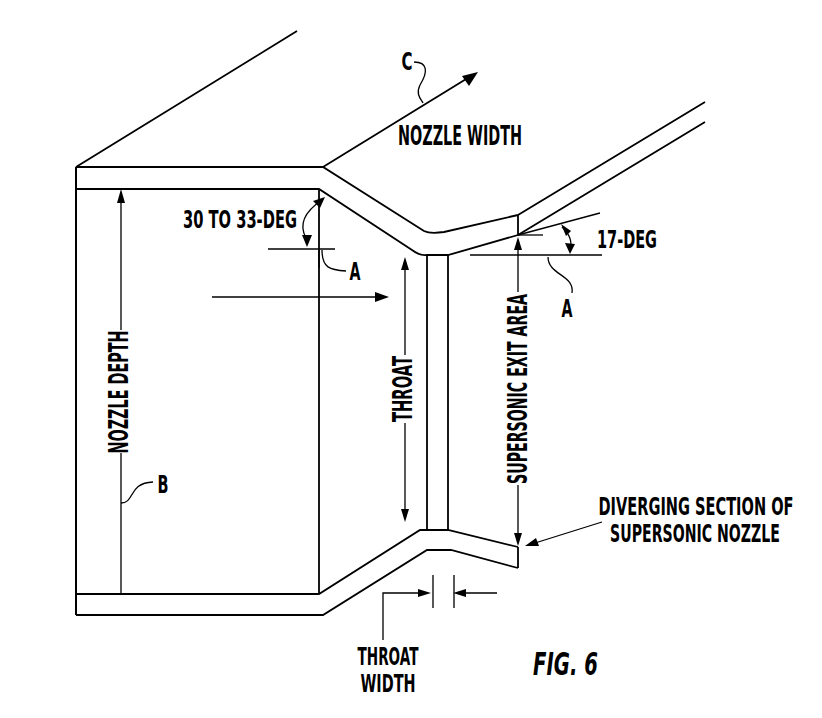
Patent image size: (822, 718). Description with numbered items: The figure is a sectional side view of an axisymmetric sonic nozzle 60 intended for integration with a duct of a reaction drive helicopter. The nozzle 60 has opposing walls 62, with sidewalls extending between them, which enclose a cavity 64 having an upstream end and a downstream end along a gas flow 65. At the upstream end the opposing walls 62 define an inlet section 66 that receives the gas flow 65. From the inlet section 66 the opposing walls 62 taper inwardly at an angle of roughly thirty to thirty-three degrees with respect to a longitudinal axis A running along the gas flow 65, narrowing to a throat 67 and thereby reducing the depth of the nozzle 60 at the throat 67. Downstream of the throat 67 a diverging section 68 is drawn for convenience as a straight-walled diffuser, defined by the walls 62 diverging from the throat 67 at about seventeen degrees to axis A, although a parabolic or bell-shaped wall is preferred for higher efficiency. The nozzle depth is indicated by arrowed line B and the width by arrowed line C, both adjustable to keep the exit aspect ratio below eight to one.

The axisymmetric sonic nozzle 60 is at (261, 122).
The opposing walls 62 is at (145, 173).
The cavity 64 is at (187, 340).
The gas flow 65 is at (278, 298).
The inlet section 66 is at (170, 578).
The throat 67 is at (425, 270).
The diverging section 68 is at (477, 232).